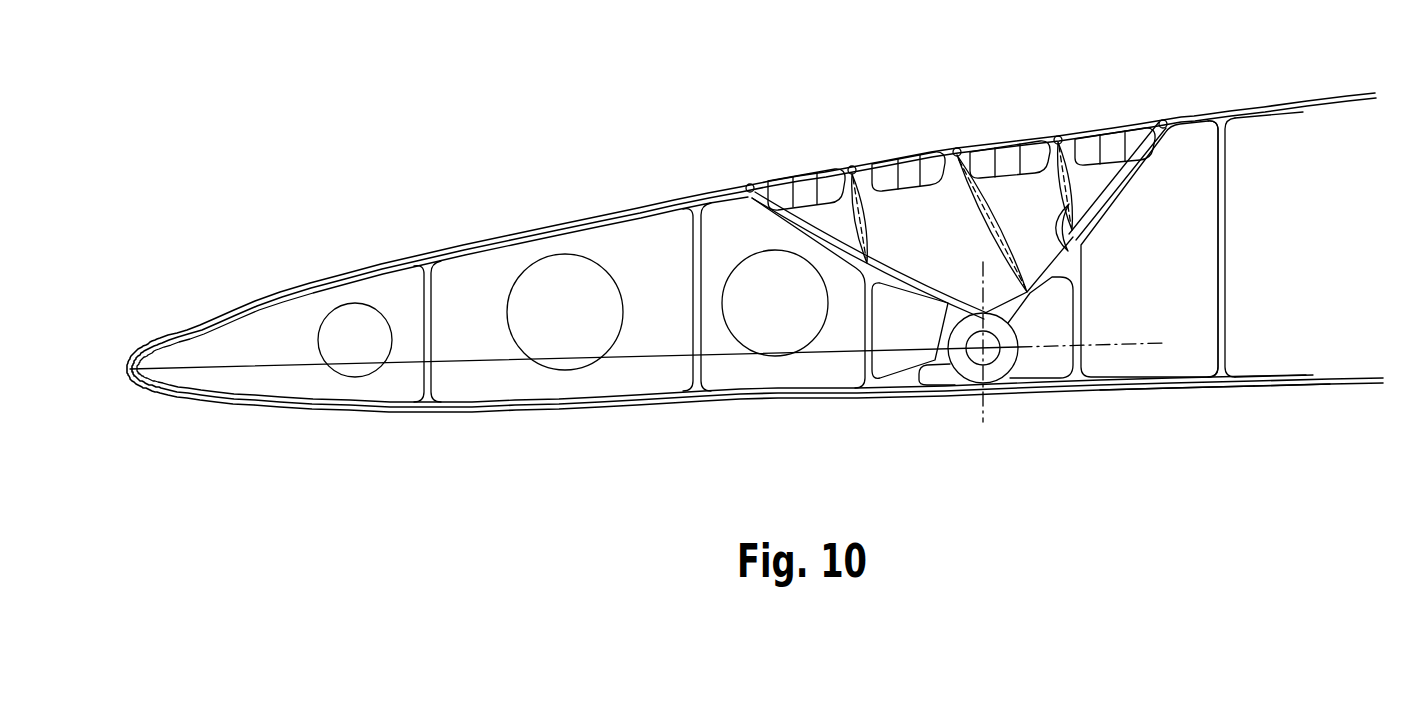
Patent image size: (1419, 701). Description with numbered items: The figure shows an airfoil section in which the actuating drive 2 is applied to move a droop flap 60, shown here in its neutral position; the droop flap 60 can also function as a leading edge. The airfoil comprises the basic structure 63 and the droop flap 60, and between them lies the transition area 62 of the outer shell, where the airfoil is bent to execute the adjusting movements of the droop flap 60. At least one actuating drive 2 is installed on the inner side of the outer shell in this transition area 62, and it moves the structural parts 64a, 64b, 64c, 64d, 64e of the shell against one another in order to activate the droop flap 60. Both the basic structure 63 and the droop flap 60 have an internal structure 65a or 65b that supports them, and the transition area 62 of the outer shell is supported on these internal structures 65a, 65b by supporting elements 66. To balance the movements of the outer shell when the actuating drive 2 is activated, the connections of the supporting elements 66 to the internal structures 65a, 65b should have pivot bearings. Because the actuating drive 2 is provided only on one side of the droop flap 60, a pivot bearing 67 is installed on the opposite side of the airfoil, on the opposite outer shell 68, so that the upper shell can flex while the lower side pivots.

The actuating drive 2 is at (812, 207).
The droop flap 60 is at (585, 430).
The transition area 62 is at (905, 112).
The basic structure of the airfoil 63 is at (1277, 398).
The structural part 64a is at (768, 183).
The structural part 64b is at (827, 172).
The structural part 64c is at (923, 157).
The structural part 64d is at (1030, 137).
The structural part 64e is at (1127, 123).
The internal structure 65a is at (1225, 263).
The internal structure 65b is at (432, 300).
The supporting element 66 is at (875, 235).
The pivot bearing 67 is at (1000, 367).
The opposite outer shell 68 is at (1162, 390).